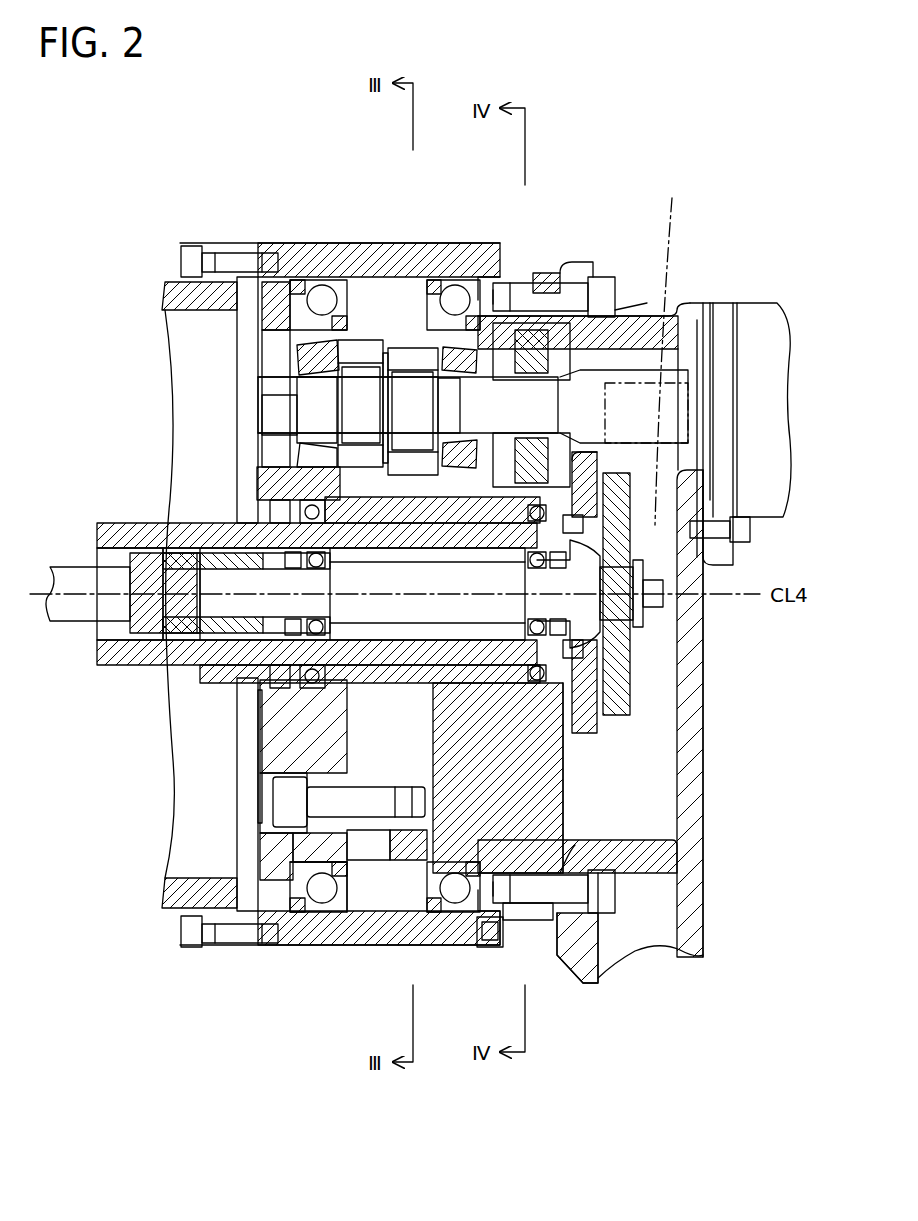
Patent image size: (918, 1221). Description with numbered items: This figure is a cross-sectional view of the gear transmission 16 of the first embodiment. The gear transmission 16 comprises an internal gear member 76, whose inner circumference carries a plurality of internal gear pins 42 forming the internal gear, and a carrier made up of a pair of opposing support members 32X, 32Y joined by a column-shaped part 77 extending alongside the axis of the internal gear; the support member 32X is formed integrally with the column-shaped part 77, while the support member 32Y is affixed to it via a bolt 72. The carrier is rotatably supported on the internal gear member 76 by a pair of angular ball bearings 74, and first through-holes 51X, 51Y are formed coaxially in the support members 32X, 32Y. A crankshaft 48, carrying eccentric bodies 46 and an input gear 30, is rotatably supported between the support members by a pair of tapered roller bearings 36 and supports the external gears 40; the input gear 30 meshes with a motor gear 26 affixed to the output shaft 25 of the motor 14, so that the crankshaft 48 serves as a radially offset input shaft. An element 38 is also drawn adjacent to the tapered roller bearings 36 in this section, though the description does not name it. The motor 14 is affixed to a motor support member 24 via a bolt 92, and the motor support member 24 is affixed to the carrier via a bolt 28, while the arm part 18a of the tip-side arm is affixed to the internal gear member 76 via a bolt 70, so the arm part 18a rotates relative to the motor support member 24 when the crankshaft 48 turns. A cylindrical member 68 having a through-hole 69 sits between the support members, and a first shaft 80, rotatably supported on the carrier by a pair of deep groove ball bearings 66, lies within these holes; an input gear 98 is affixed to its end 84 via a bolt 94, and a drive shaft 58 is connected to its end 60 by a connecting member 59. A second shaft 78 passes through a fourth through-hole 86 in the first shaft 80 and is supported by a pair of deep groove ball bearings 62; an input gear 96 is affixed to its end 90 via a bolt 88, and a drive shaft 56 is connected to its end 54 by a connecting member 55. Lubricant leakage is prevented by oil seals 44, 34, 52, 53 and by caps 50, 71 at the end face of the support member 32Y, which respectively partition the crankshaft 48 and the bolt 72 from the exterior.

The motor 14 is at (760, 330).
The gear transmission 16 is at (591, 157).
The arm part 18a is at (165, 297).
The motor support member 24 is at (710, 340).
The output shaft 25 is at (668, 348).
The motor gear 26 is at (637, 345).
The bolt 28 is at (600, 325).
The input gear 30 is at (600, 296).
The support member 32X is at (520, 310).
The support member 32Y is at (270, 280).
The oil seal 34 is at (488, 298).
The tapered roller bearings 36 is at (303, 320).
The pinion shaft 38 is at (340, 330).
The external gears 40 is at (362, 330).
The internal gear pins 42 is at (393, 345).
The oil seal 44 is at (232, 327).
The eccentric bodies 46 is at (250, 385).
The crankshaft 48 is at (265, 398).
The cap 50 is at (262, 408).
The first through-hole 51X is at (560, 440).
The first through-hole 51Y is at (262, 490).
The oil seal 52 is at (262, 503).
The oil seal 53 is at (250, 520).
The end 54 is at (165, 535).
The connecting member 55 is at (145, 551).
The drive shaft 56 is at (75, 605).
The drive shaft 58 is at (125, 652).
The connecting member 59 is at (170, 660).
The end 60 is at (195, 675).
The deep groove ball bearings 62 is at (245, 660).
The deep groove ball bearings 66 is at (240, 820).
The cylindrical member 68 is at (290, 802).
The through-hole 69 is at (300, 818).
The bolt 70 is at (190, 940).
The cap 71 is at (247, 920).
The bolt 72 is at (272, 920).
The angular ball bearings 74 is at (324, 898).
The internal gear member 76 is at (350, 935).
The column-shaped part 77 is at (405, 830).
The second shaft 78 is at (698, 770).
The first shaft 80 is at (690, 740).
The end 84 is at (600, 690).
The fourth through-hole 86 is at (597, 652).
The bolt 88 is at (650, 612).
The end 90 is at (650, 573).
The bolt 92 is at (750, 530).
The bolt 94 is at (700, 470).
The input gear 96 is at (705, 430).
The input gear 98 is at (700, 400).